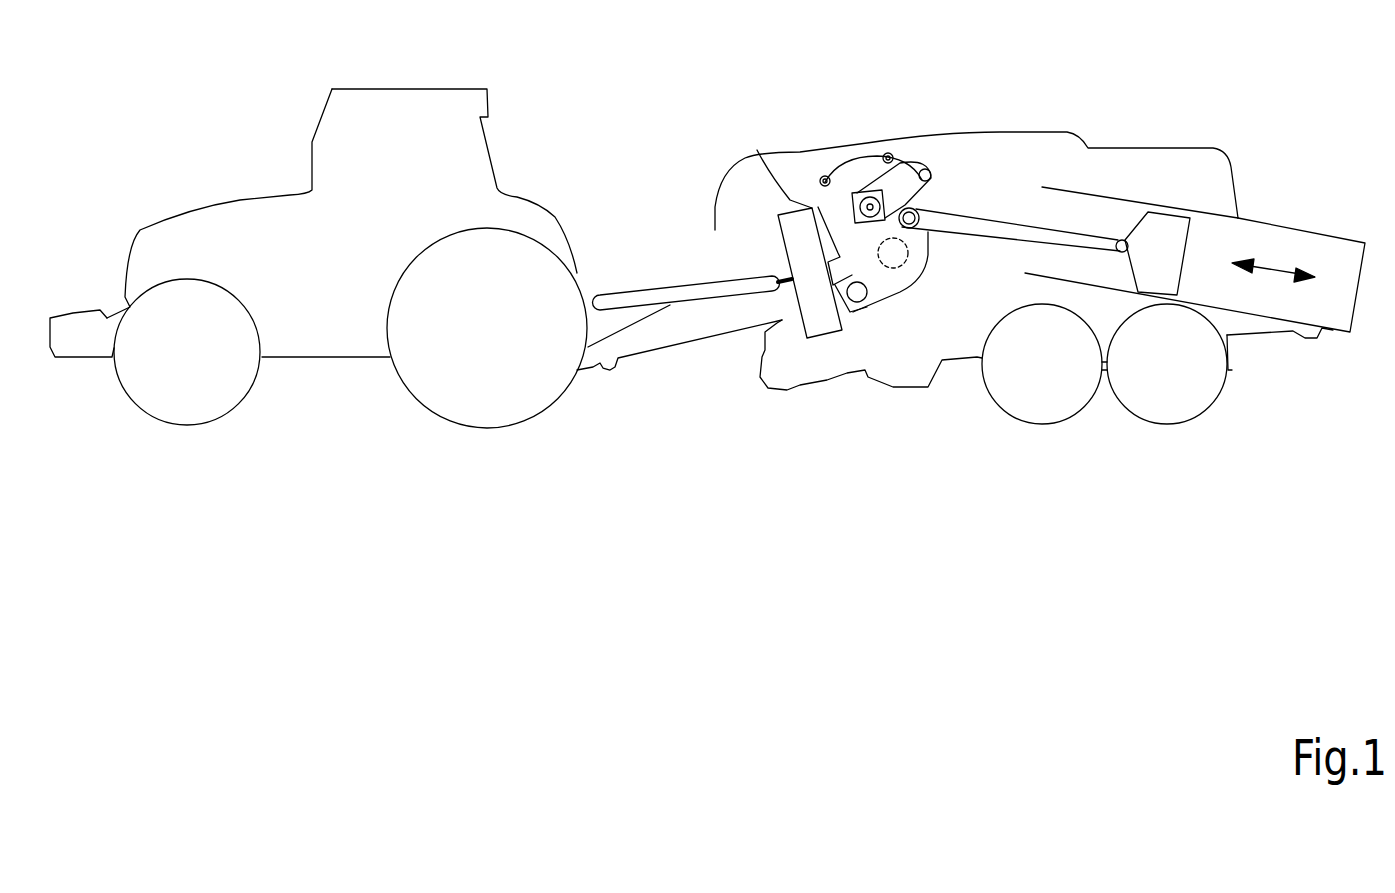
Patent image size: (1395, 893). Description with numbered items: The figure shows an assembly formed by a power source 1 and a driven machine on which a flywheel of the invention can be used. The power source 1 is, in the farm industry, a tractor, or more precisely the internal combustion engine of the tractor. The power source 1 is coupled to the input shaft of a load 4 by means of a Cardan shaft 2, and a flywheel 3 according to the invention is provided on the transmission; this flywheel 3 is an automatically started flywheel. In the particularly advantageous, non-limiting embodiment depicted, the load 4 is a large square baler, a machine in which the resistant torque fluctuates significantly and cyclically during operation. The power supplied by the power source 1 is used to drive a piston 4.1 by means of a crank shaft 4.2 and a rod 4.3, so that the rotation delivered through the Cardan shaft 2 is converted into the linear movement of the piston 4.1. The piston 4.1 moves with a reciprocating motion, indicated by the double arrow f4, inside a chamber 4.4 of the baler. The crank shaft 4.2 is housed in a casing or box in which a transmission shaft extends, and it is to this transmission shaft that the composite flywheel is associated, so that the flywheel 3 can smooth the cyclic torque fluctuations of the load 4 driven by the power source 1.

The power source 1 is at (343, 137).
The Cardan shaft 2 is at (680, 293).
The flywheel 3 is at (795, 220).
The load 4 is at (863, 188).
The piston 4.1 is at (1163, 228).
The crank shaft 4.2 is at (870, 207).
The rod 4.3 is at (997, 232).
The chamber 4.4 is at (1307, 238).
The double arrow f4 is at (1272, 272).